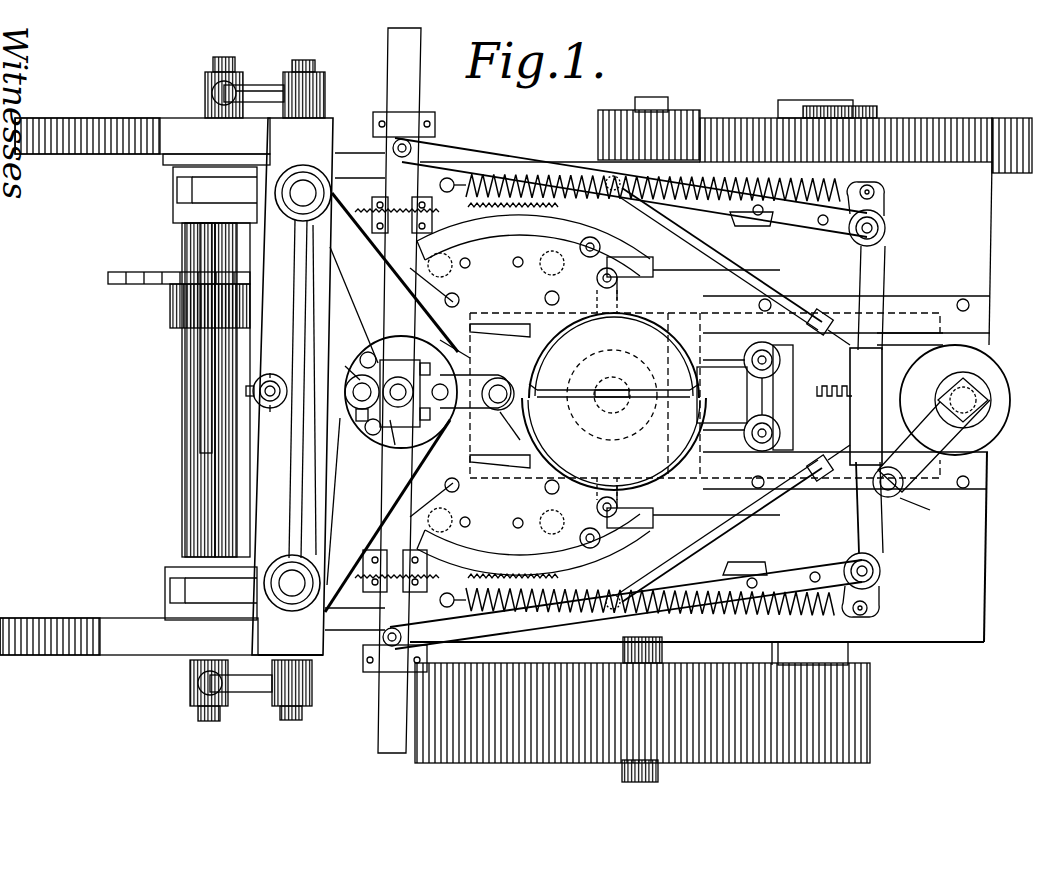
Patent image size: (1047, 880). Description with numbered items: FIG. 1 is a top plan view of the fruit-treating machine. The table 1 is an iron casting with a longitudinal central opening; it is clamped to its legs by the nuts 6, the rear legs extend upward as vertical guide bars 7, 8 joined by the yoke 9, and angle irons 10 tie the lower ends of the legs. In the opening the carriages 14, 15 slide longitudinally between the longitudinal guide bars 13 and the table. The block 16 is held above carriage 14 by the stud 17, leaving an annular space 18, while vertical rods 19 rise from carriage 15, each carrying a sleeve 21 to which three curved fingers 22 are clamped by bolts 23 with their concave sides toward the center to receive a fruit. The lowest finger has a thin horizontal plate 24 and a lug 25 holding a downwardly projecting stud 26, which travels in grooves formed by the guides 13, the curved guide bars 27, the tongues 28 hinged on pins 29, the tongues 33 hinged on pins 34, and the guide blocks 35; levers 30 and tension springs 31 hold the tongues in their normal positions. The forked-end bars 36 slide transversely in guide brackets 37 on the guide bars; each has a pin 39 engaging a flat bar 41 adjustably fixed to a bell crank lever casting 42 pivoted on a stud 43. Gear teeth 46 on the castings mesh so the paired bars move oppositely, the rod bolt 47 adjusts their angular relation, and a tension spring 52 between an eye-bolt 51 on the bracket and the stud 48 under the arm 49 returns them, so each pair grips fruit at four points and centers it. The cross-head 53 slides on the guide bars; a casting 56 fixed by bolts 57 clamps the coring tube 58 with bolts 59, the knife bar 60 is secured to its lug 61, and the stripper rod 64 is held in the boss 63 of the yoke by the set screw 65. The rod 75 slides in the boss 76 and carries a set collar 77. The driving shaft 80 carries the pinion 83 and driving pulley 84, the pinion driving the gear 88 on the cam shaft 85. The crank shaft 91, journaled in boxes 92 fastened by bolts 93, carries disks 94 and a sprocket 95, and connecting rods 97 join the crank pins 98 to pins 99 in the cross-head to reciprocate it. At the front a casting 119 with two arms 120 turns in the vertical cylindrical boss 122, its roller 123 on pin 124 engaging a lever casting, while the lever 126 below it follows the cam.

The table 1 is at (978, 228).
The nuts 6 is at (745, 228).
The vertical guide bar 7 is at (303, 185).
The vertical guide bar 8 is at (292, 600).
The yoke 9 is at (265, 460).
The angle irons 10 is at (803, 100).
The longitudinal guide bars 13 is at (912, 300).
The carriage 14 is at (500, 333).
The carriage 15 is at (935, 345).
The block 16 is at (585, 420).
The stud 17 is at (630, 385).
The annular space 18 is at (617, 410).
The vertical rods 19 is at (755, 375).
The sleeve 21 is at (745, 355).
The curved fingers 22 is at (625, 352).
The bolts 23 is at (818, 399).
The thin horizontal plate 24 is at (498, 410).
The lug 25 is at (660, 278).
The downwardly projecting stud 26 is at (655, 265).
The curved guide bar 27 is at (640, 262).
The tongue 28 is at (600, 255).
The pin 29 is at (597, 280).
The lever 30 is at (543, 235).
The tension spring 31 is at (545, 210).
The tongues 33 is at (454, 392).
The pins 34 is at (480, 394).
The guide blocks 35 is at (520, 268).
The forked-end bars 36 is at (418, 50).
The guide brackets 37 is at (415, 133).
The pin 39 is at (418, 150).
The flat bar 41 is at (492, 165).
The bell crank lever casting 42 is at (884, 270).
The stud 43 is at (886, 227).
The gear teeth 46 is at (840, 390).
The rod bolt 47 is at (762, 282).
The stud 48 is at (875, 192).
The arm 49 is at (888, 628).
The eye-bolt 51 is at (449, 178).
The tension spring 52 is at (775, 180).
The cross-head 53 is at (355, 386).
The casting 56 is at (400, 348).
The bolts 57 is at (452, 390).
The coring tube 58 is at (408, 446).
The bolts 59 is at (459, 346).
The knife bar 60 is at (487, 382).
The lug 61 is at (504, 398).
The boss 63 is at (350, 372).
The stripper rod 64 is at (363, 395).
The set screw 65 is at (362, 421).
The rod 75 is at (270, 375).
The boss 76 is at (271, 408).
The set collar 77 is at (256, 383).
The driving shaft 80 is at (655, 99).
The pinion 83 is at (612, 118).
The driving pulley 84 is at (522, 752).
The cam shaft 85 is at (860, 108).
The gear 88 is at (962, 128).
The crank shaft 91 is at (184, 395).
The boxes 92 is at (173, 208).
The bolts 93 is at (176, 186).
The disk 94 is at (152, 125).
The sprocket 95 is at (125, 272).
The connecting rods 97 is at (255, 85).
The crank pins 98 is at (228, 60).
The pins 99 is at (312, 65).
The casting 119 is at (975, 386).
The arms 120 is at (960, 435).
The vertical cylindrical boss 122 is at (990, 428).
The roller 123 is at (890, 498).
The pin 124 is at (931, 520).
The lever 126 is at (963, 390).